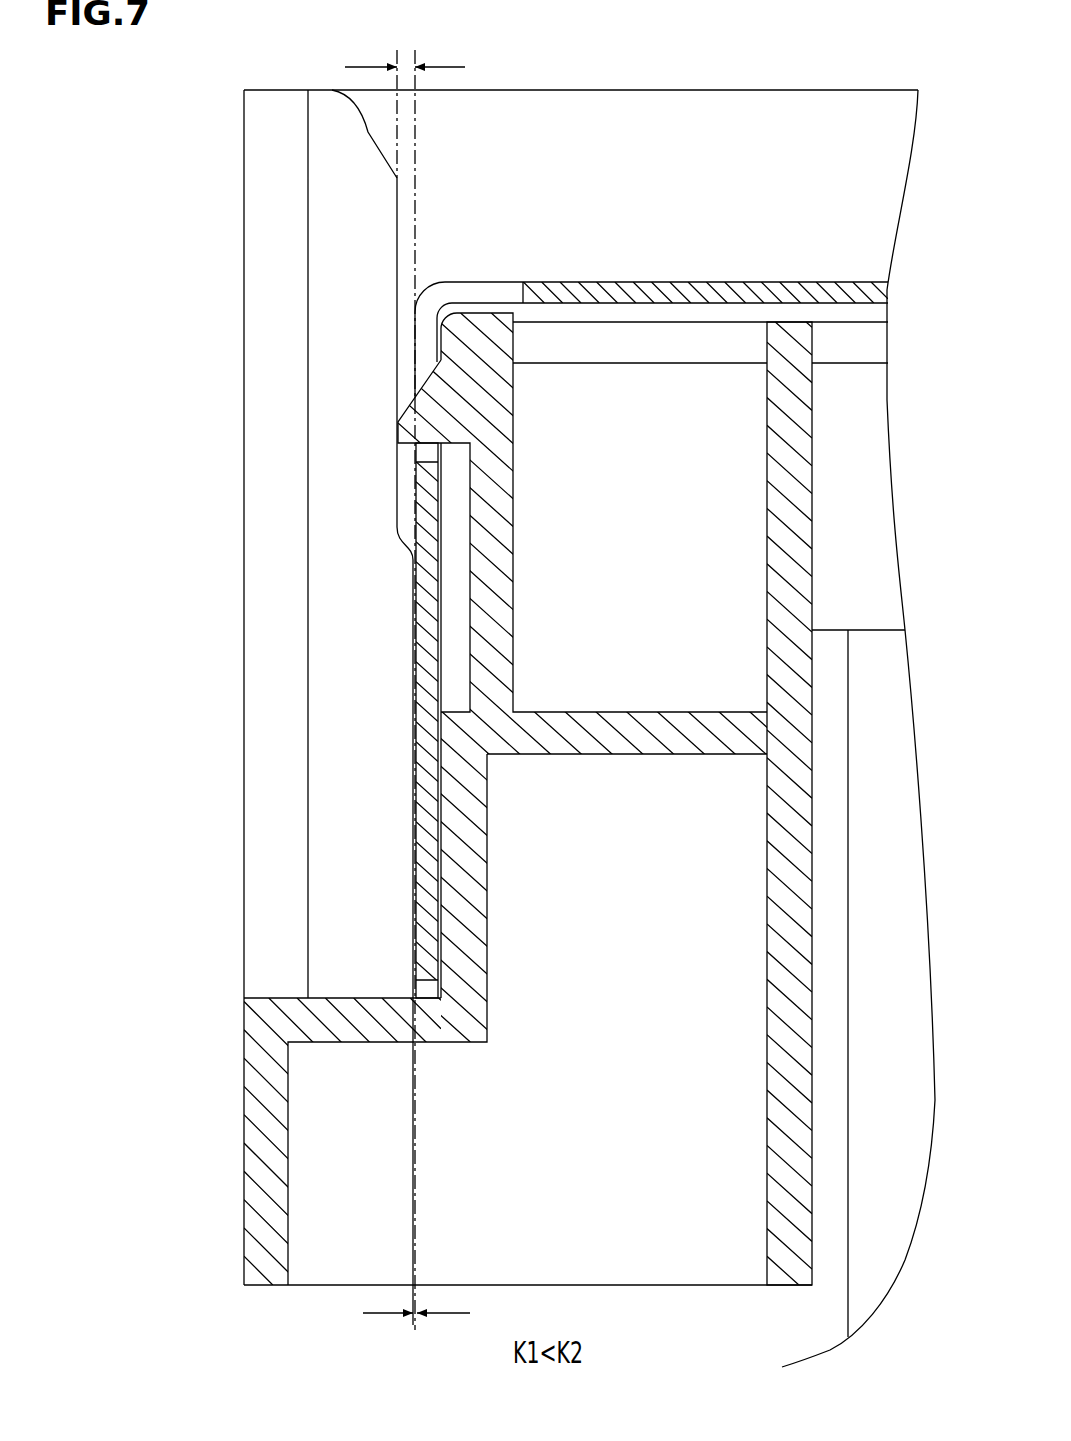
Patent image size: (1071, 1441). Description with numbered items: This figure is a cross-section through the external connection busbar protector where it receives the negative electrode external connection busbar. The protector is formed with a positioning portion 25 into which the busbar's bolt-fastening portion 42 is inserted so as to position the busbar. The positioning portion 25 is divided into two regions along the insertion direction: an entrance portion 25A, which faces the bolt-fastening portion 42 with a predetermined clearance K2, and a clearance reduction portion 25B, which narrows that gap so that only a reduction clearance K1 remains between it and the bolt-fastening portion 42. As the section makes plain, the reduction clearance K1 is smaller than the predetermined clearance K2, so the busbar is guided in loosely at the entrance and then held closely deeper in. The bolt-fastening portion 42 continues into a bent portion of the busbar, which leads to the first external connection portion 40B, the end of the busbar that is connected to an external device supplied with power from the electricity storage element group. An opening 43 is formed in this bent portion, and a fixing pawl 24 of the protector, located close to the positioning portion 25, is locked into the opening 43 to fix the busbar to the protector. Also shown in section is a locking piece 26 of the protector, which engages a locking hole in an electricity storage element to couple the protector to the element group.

The fixing pawl 24 is at (448, 403).
The positioning portion 25 is at (282, 143).
The entrance portion 25A is at (383, 243).
The clearance reduction portion 25B is at (400, 597).
The locking piece 26 is at (457, 877).
The first external connection portion 40B is at (740, 293).
The bolt-fastening portion 42 is at (420, 668).
The opening 43 is at (468, 298).
The reduction clearance K1 is at (416, 1326).
The predetermined clearance K2 is at (404, 62).